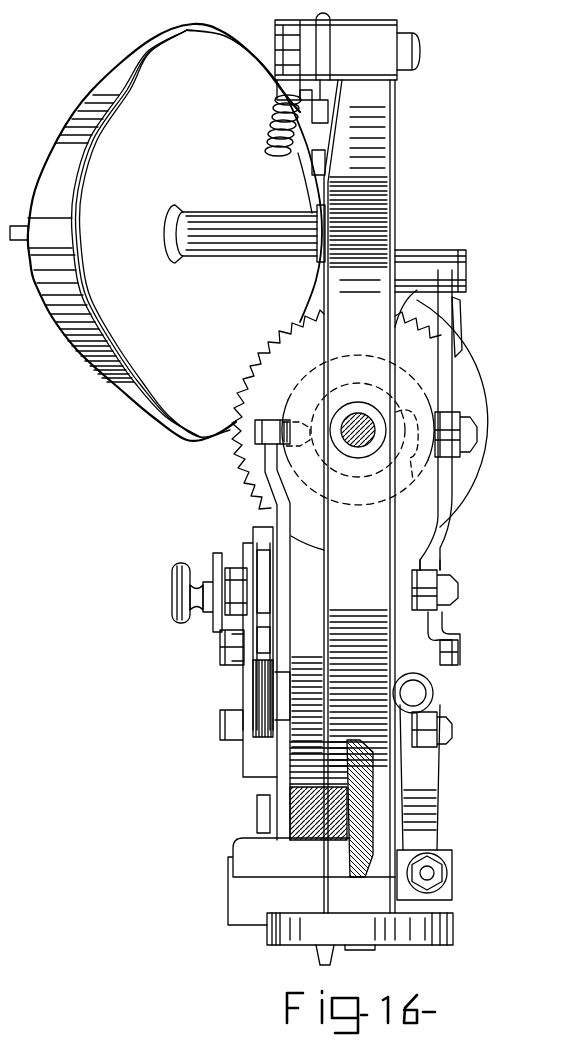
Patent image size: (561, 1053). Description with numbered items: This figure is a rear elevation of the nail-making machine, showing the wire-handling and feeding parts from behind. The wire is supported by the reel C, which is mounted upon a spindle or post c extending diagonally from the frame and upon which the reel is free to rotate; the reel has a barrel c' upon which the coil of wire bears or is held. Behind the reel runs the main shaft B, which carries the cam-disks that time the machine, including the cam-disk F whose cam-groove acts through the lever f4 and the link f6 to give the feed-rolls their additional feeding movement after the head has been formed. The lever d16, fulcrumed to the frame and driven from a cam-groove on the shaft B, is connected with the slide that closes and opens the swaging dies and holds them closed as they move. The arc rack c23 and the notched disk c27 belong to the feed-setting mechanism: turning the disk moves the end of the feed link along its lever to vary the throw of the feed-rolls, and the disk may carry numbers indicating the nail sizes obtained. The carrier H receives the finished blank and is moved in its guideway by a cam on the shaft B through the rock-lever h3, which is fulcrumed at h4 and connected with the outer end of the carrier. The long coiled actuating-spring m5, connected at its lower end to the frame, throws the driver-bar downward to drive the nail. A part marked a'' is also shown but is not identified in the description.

The reel C is at (175, 232).
The barrel c' is at (25, 210).
The spindle or post c is at (244, 234).
The actuating-spring m5 is at (278, 123).
The cam-disk F is at (411, 391).
The lever f4 is at (450, 378).
The main shaft B is at (350, 437).
The rock-lever h3 is at (428, 770).
The link f6 is at (447, 622).
The fulcrum of the rock-lever h4 is at (418, 694).
The carrier H is at (452, 860).
The boss a'' is at (318, 826).
The lever d16 is at (284, 594).
The notched disk c27 is at (222, 623).
The arc rack c23 is at (250, 632).